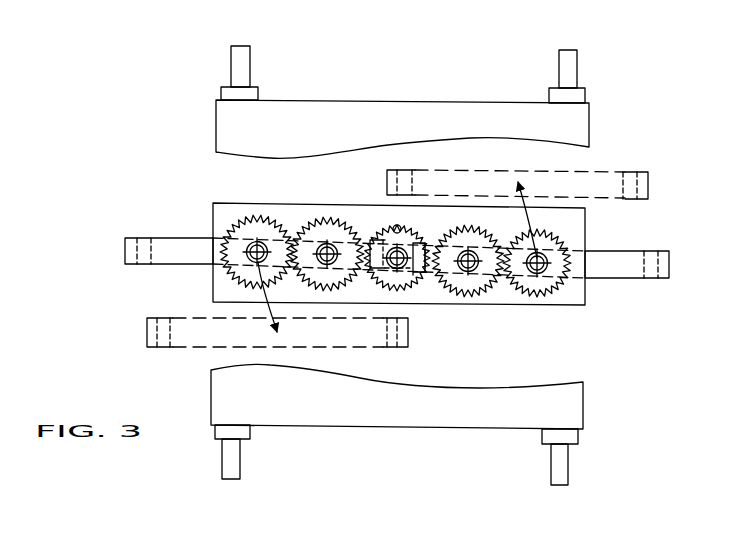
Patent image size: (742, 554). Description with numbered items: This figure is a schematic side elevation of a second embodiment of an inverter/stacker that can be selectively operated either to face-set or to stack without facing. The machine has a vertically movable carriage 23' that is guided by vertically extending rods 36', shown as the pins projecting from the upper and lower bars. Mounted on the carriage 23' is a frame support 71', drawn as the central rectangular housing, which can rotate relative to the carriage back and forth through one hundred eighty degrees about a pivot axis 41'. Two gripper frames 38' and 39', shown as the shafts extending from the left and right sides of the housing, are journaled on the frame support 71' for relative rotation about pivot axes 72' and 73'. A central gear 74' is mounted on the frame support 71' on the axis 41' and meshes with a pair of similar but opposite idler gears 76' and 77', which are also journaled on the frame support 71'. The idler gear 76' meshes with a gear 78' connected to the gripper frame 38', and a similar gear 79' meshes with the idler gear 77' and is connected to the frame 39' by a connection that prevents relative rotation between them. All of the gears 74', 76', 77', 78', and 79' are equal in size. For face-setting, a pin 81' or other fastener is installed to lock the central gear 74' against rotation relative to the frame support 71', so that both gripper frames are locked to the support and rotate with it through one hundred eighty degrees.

The carriage 23' is at (402, 101).
The vertically extending rods 36' is at (414, 265).
The gripper frame 38' is at (169, 223).
The gripper frame 39' is at (650, 242).
The pivot axis 41' is at (376, 229).
The frame support 71' is at (399, 287).
The pivot axis 72' is at (215, 268).
The pivot axis 73' is at (574, 286).
The central gear 74' is at (407, 279).
The idler gear 76' is at (327, 280).
The idler gear 77' is at (476, 279).
The gear 78' is at (253, 278).
The gear 79' is at (537, 292).
The pin 81' is at (421, 205).